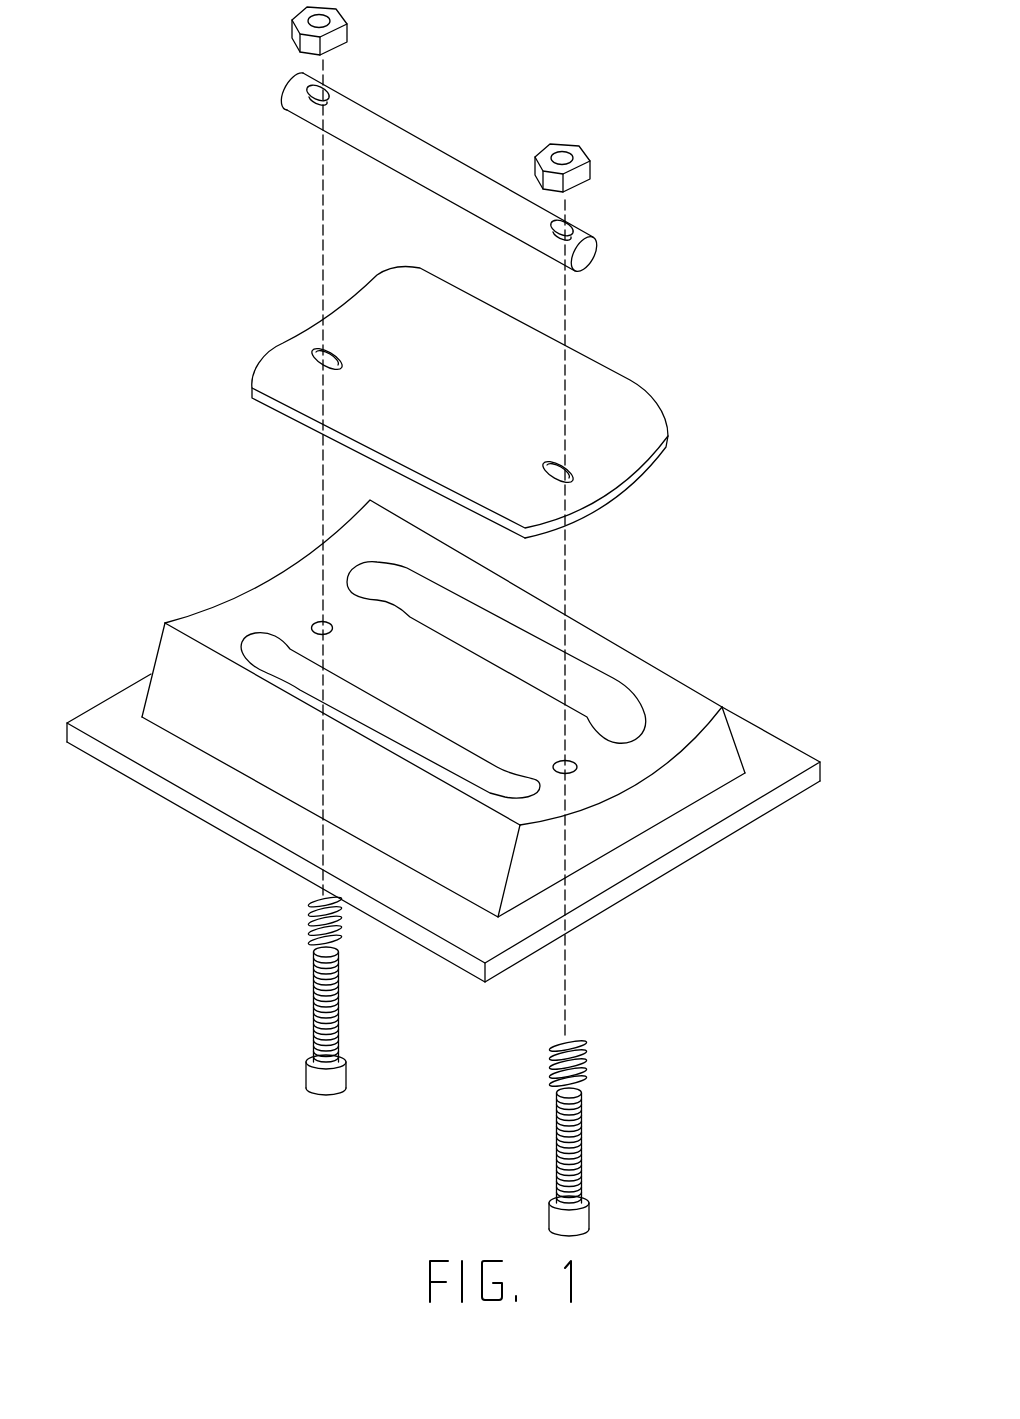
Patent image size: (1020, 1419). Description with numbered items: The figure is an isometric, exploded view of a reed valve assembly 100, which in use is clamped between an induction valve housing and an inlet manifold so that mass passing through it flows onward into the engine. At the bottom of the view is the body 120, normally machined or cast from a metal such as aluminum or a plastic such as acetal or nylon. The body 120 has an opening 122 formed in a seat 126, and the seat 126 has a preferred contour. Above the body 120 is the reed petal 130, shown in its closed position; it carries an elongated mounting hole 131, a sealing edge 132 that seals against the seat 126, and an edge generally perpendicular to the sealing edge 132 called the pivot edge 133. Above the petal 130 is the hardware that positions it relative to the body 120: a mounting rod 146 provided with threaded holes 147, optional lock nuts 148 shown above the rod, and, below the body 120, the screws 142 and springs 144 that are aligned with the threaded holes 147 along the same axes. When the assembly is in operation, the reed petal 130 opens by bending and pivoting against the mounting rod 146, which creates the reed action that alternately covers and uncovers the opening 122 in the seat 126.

The reed valve assembly 100 is at (558, 540).
The body 120 is at (457, 741).
The opening 122 is at (537, 637).
The seat 126 is at (680, 825).
The reed petal 130 is at (515, 394).
The elongated mounting hole 131 is at (345, 392).
The sealing edge 132 is at (327, 463).
The pivot edge 133 is at (666, 437).
The screws 142 is at (369, 1091).
The springs 144 is at (374, 991).
The mounting rod 146 is at (338, 174).
The threaded holes 147 is at (338, 163).
The lock nuts 148 is at (334, 99).